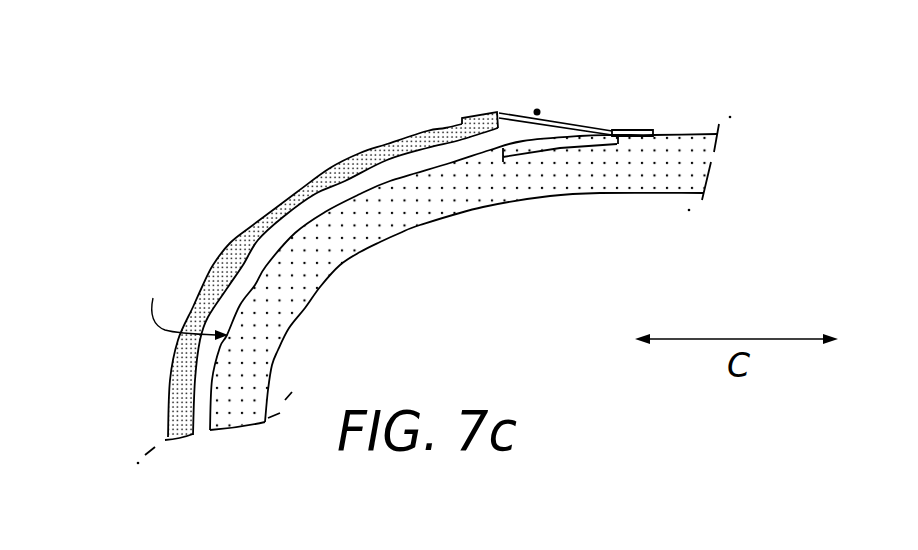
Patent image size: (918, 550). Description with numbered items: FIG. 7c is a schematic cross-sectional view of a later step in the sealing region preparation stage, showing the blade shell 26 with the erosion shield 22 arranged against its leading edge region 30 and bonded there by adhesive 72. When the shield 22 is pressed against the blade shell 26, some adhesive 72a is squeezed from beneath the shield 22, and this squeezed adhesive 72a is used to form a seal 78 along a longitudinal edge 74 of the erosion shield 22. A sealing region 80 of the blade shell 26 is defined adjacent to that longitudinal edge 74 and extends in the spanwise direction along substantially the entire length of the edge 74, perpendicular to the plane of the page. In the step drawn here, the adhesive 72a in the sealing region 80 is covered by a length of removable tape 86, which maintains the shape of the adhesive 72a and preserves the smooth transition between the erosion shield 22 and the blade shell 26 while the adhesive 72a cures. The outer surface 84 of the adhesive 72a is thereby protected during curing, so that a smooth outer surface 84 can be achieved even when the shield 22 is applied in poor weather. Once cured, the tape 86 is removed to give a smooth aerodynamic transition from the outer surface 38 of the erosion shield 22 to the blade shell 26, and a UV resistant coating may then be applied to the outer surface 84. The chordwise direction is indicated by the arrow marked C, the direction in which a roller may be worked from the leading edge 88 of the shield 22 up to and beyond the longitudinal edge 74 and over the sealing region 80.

The erosion shield 22 is at (232, 248).
The blade shell 26 is at (266, 358).
The leading edge region 30 is at (179, 299).
The outer surface of the erosion shield 38 is at (385, 144).
The adhesive 72 is at (322, 208).
The squeezed adhesive 72a is at (513, 134).
The longitudinal edge 74 is at (535, 111).
The seal 78 is at (561, 127).
The sealing region 80 is at (619, 146).
The outer surface of the adhesive 84 is at (558, 128).
The length of removable tape 86 is at (612, 130).
The leading edge of the shield 88 is at (168, 417).